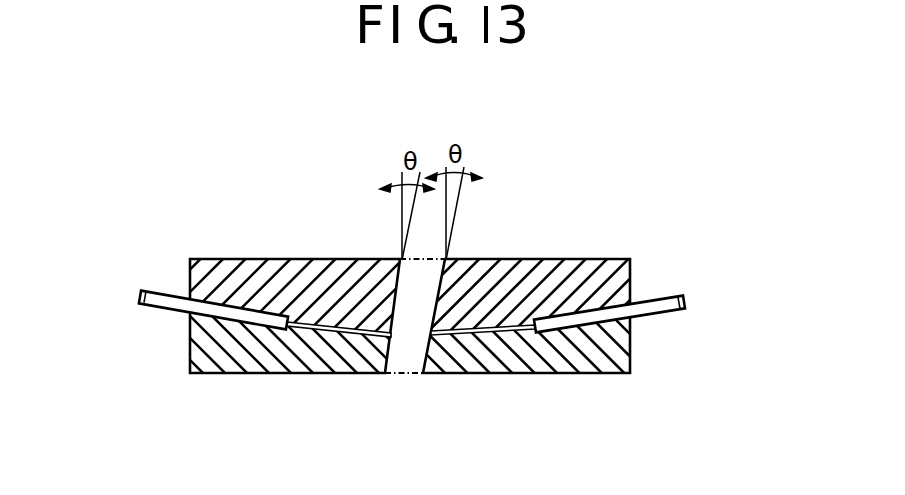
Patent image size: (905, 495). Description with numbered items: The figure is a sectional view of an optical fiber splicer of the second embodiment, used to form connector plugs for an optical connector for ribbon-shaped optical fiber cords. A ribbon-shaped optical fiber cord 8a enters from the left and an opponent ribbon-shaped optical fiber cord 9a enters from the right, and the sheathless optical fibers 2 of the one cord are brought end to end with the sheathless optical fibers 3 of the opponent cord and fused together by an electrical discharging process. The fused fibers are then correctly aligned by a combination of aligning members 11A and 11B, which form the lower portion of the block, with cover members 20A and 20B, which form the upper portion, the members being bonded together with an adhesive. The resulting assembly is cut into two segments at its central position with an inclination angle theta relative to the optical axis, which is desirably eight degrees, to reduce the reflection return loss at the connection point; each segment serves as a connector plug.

The sheathless optical fibers 2 is at (324, 357).
The sheathless optical fibers 3 is at (493, 340).
The cover member 20A is at (273, 263).
The cover member 20B is at (530, 270).
The aligning member 11A is at (213, 353).
The aligning member 11B is at (582, 365).
The ribbon-shaped optical fiber cord 8a is at (138, 293).
The ribbon-shaped optical fiber cord 9a is at (687, 302).